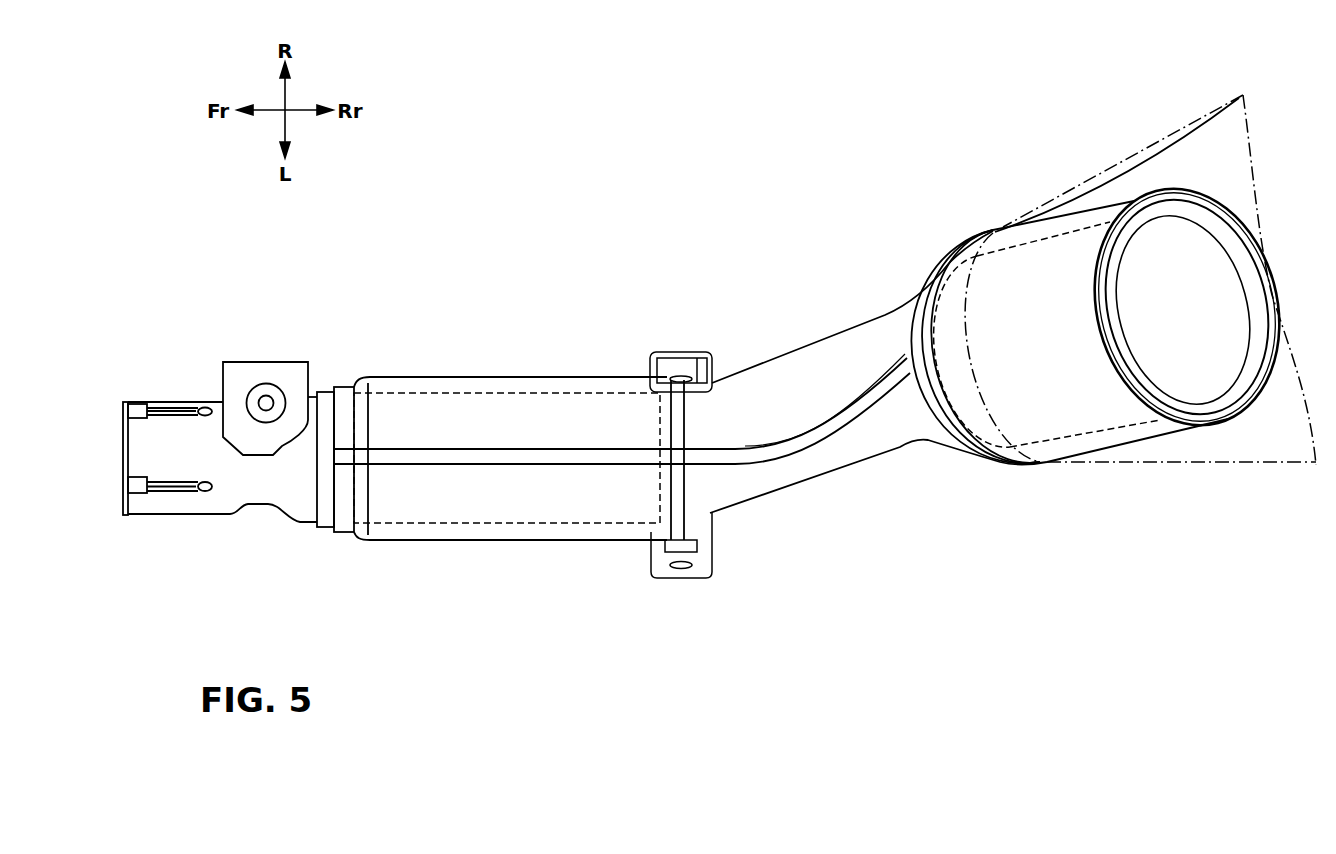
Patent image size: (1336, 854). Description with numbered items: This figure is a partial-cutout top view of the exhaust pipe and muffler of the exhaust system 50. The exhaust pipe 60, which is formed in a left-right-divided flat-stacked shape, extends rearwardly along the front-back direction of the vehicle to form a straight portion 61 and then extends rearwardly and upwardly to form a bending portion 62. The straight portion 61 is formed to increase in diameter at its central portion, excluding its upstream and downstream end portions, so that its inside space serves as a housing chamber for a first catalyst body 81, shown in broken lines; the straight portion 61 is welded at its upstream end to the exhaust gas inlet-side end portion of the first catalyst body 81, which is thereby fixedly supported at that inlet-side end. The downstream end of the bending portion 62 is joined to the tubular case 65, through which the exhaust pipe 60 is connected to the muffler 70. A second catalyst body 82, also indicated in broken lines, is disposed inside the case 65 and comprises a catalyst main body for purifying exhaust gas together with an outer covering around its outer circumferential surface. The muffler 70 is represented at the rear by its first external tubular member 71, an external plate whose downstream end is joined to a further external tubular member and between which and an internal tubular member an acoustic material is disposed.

The exhaust system 50 is at (348, 330).
The exhaust pipe 60 is at (187, 400).
The straight portion 61 is at (432, 385).
The bending portion 62 is at (818, 462).
The case 65 is at (1105, 398).
The muffler 70 is at (1197, 120).
The first external tubular member 71 is at (1133, 162).
The first catalyst body 81 is at (540, 410).
The second catalyst body 82 is at (1043, 410).